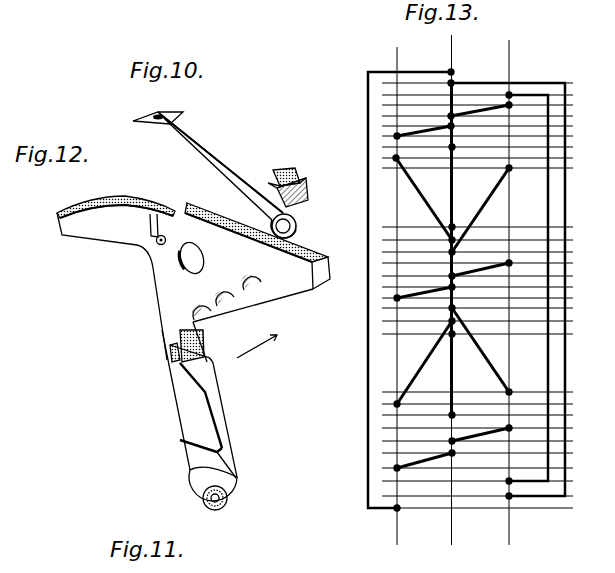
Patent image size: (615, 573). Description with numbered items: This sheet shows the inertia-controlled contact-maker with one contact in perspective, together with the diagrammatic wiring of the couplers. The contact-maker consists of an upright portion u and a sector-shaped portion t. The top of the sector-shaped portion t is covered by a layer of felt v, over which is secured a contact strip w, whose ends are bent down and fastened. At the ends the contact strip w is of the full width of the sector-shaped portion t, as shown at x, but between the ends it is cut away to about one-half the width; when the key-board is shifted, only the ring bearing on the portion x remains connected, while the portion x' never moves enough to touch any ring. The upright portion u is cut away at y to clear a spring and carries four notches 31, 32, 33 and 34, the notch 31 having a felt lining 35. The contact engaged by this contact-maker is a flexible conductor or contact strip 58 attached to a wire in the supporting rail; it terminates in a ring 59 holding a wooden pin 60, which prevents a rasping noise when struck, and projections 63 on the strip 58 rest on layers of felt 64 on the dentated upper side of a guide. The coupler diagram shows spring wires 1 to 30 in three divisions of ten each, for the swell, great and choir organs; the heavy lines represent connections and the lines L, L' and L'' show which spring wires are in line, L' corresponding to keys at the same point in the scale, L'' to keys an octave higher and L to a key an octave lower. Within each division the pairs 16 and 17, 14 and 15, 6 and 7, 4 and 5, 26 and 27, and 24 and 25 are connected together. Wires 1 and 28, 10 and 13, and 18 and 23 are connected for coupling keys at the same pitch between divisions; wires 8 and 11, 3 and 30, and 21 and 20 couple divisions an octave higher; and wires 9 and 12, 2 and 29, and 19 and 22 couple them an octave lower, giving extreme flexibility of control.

In FIG. 10, the flexible conductor or contact strip 58 is at (206, 150).
In FIG. 10, the projections 63 is at (268, 181).
In FIG. 10, the layers of felt 64 is at (294, 182).
In FIG. 10, the ring 59 is at (294, 221).
In FIG. 10, the wooden pin 60 is at (293, 226).
In FIG. 12, the sector-shaped portion t is at (92, 232).
In FIG. 12, the layer of felt v is at (121, 201).
In FIG. 12, the full-width end portion of contact strip x is at (239, 217).
In FIG. 12, the end portion of contact strip x' is at (275, 337).
In FIG. 12, the contact strip w is at (312, 260).
In FIG. 12, the notch 32 is at (204, 305).
In FIG. 12, the notch 33 is at (224, 289).
In FIG. 12, the notch 34 is at (250, 273).
In FIG. 12, the felt lining 35 is at (176, 342).
In FIG. 11, the upright portion u is at (208, 380).
In FIG. 11, the notch 31 is at (180, 352).
In FIG. 11, the cut-away portion y is at (190, 427).
In FIG. 13, the line L is at (382, 292).
In FIG. 13, the line L' is at (436, 290).
In FIG. 13, the line L'' is at (493, 292).
In FIG. 13, the spring wire 1 is at (453, 335).
In FIG. 13, the spring wire 2 is at (451, 322).
In FIG. 13, the spring wire 3 is at (452, 309).
In FIG. 13, the spring wire 4 is at (397, 298).
In FIG. 13, the spring wire 5 is at (452, 287).
In FIG. 13, the spring wire 6 is at (452, 276).
In FIG. 13, the spring wire 7 is at (509, 262).
In FIG. 13, the spring wire 8 is at (453, 252).
In FIG. 13, the spring wire 9 is at (451, 240).
In FIG. 13, the spring wire 10 is at (453, 226).
In FIG. 13, the spring wire 11 is at (510, 169).
In FIG. 13, the spring wire 12 is at (396, 158).
In FIG. 13, the spring wire 13 is at (452, 148).
In FIG. 13, the spring wire 14 is at (397, 136).
In FIG. 13, the spring wire 15 is at (451, 126).
In FIG. 13, the spring wire 16 is at (451, 116).
In FIG. 13, the spring wire 17 is at (509, 105).
In FIG. 13, the spring wire 18 is at (509, 95).
In FIG. 13, the spring wire 19 is at (451, 72).
In FIG. 13, the spring wire 20 is at (452, 82).
In FIG. 13, the spring wire 21 is at (397, 509).
In FIG. 13, the spring wire 22 is at (510, 497).
In FIG. 13, the spring wire 23 is at (509, 482).
In FIG. 13, the spring wire 24 is at (397, 468).
In FIG. 13, the spring wire 25 is at (452, 454).
In FIG. 13, the spring wire 26 is at (452, 441).
In FIG. 13, the spring wire 27 is at (509, 427).
In FIG. 13, the spring wire 28 is at (452, 415).
In FIG. 13, the spring wire 29 is at (396, 403).
In FIG. 13, the spring wire 30 is at (510, 392).